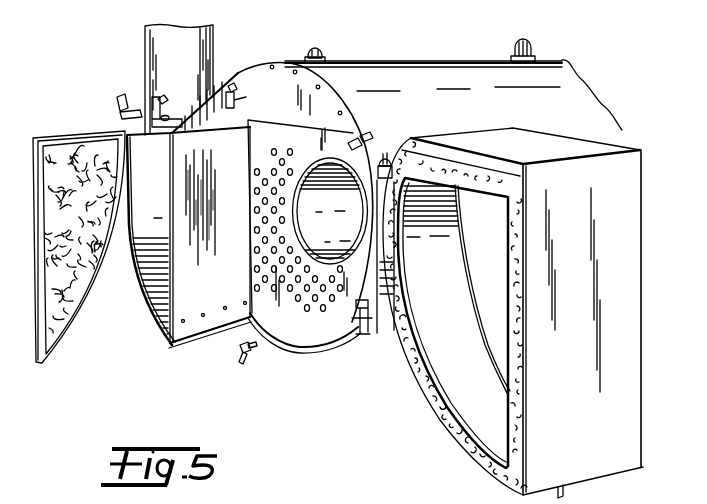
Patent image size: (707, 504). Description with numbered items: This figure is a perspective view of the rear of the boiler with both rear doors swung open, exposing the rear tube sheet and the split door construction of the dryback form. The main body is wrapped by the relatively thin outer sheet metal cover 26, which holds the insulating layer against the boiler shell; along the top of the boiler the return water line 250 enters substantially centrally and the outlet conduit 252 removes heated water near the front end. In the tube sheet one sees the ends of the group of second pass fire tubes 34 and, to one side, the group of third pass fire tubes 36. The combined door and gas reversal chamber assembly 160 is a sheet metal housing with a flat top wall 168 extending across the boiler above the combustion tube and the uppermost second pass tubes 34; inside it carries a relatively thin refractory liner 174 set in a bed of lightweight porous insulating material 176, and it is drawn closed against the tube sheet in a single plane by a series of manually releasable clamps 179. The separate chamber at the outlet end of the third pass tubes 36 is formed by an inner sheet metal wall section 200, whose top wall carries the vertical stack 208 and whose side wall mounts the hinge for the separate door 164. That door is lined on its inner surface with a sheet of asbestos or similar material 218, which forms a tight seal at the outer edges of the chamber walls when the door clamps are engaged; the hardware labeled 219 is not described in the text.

The outer sheet metal cover 26 is at (428, 70).
The second pass fire tubes 34 is at (293, 161).
The third pass fire tubes 36 is at (258, 167).
The combined door and gas reversal chamber assembly 160 is at (540, 301).
The door 164 is at (112, 295).
The flat top wall 168 is at (573, 142).
The refractory liner 174 is at (447, 381).
The lightweight porous insulating material 176 is at (398, 329).
The manually releasable clamps 179 is at (367, 143).
The inner sheet metal wall section 200 is at (133, 237).
The vertical stack 208 is at (160, 52).
The sheet of asbestos or similar material 218 is at (80, 157).
The clamp 219 is at (150, 100).
The return water line 250 is at (531, 50).
The outlet conduit 252 is at (315, 46).